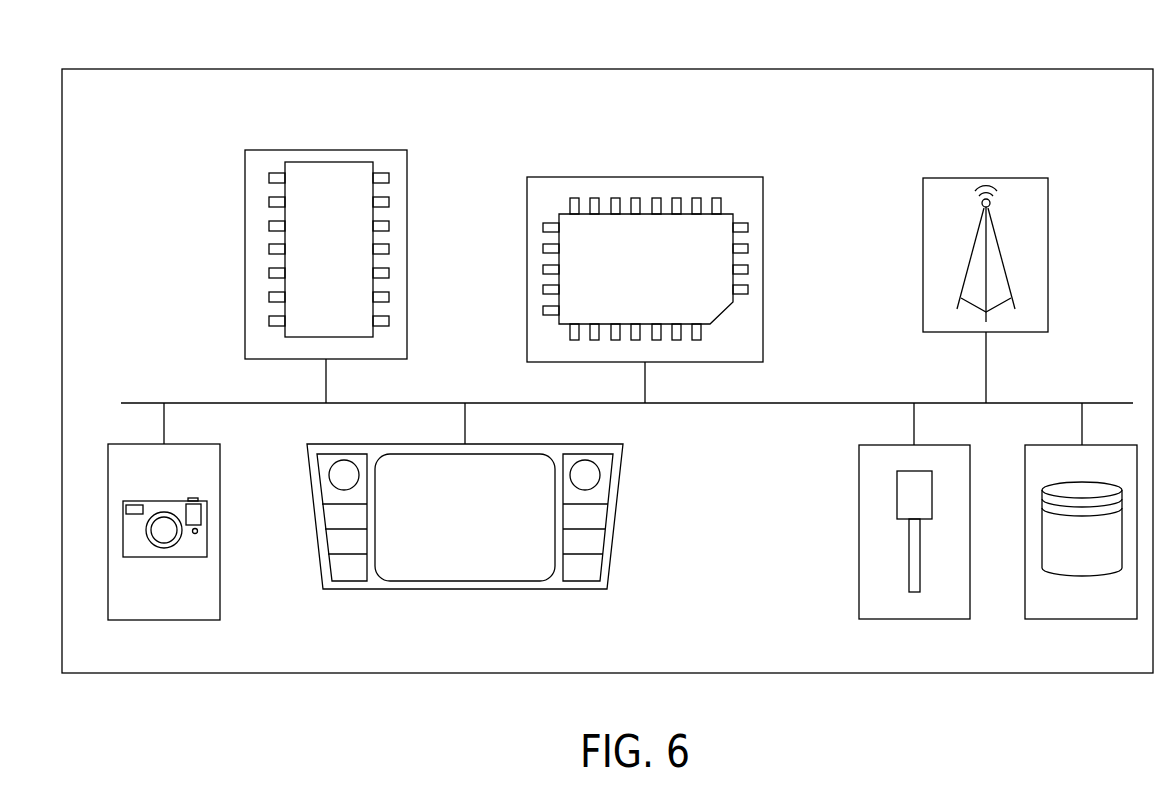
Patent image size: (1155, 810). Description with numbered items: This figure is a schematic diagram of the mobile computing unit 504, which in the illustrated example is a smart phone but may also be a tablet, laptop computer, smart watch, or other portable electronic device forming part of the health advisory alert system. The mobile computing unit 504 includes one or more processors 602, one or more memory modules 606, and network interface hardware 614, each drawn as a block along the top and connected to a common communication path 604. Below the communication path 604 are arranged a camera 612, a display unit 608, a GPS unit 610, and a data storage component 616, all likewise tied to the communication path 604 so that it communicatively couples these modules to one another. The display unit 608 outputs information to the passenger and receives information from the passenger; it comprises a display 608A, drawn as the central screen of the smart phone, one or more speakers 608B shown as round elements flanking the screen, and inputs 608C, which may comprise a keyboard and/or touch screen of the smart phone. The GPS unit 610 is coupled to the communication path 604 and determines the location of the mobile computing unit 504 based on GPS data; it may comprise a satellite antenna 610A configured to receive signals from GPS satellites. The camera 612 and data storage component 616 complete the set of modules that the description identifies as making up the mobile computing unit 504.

The mobile computing unit 504 is at (187, 69).
The processors 602 is at (327, 150).
The communication path 604 is at (1087, 403).
The memory modules 606 is at (645, 177).
The display unit 608 is at (464, 546).
The display 608A is at (520, 565).
The speakers 608B is at (333, 474).
The inputs 608C is at (333, 542).
The GPS unit 610 is at (876, 559).
The satellite antenna 610A is at (897, 494).
The camera 612 is at (164, 620).
The network interface hardware 614 is at (986, 178).
The data storage component 616 is at (1082, 619).